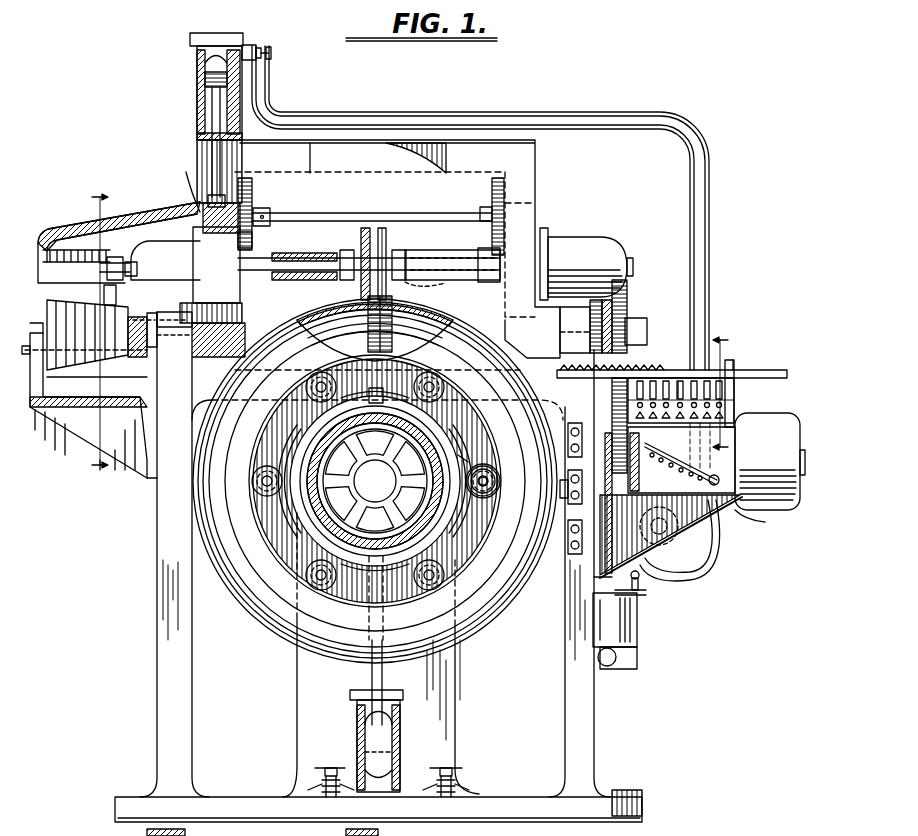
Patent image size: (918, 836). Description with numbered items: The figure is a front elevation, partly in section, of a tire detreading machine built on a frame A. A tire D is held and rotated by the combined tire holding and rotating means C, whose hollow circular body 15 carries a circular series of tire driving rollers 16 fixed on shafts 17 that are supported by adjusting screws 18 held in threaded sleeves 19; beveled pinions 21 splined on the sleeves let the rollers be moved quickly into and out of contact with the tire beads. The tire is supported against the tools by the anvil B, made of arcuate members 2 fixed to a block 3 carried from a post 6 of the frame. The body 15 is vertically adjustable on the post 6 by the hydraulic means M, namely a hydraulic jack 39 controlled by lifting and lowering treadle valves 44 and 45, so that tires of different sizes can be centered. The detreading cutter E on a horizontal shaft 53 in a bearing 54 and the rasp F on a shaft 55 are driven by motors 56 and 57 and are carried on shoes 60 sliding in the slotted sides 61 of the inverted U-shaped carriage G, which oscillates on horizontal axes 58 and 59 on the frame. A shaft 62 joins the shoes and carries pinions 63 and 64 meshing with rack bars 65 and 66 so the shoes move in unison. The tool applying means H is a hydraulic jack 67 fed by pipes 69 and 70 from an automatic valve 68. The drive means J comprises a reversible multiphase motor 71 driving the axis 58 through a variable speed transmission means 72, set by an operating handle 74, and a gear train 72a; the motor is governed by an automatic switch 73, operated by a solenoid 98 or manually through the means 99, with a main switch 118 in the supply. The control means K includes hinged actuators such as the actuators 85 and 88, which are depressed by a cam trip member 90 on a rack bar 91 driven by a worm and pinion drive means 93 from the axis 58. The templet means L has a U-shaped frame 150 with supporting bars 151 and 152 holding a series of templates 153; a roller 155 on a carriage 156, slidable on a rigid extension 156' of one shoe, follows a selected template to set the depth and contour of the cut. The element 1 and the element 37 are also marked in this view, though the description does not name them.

The frame A is at (155, 526).
The tire supporting anvil B is at (356, 313).
The combined tire holding and rotating means C is at (461, 503).
The tire D is at (483, 607).
The tire detreading cutter E is at (387, 242).
The rasp F is at (360, 241).
The oscillatory carriage G is at (538, 168).
The tool applying means H is at (196, 112).
The drive means J is at (777, 512).
The manually adjustable control means K is at (736, 399).
The templet means L is at (31, 293).
The hydraulic means M is at (357, 731).
The worm 1 is at (366, 336).
The arcuate members 2 is at (425, 302).
The block 3 is at (720, 394).
The post 6 is at (458, 706).
The hollow circular body 15 is at (300, 518).
The tire driving rollers 16 is at (432, 384).
The shafts 17 is at (490, 482).
The adjusting screws 18 is at (491, 471).
The sleeves 19 is at (486, 466).
The beveled pinions 21 is at (462, 460).
The rollers 37 is at (567, 561).
The hydraulic jack 39 is at (393, 741).
The lifting treadle valve 44 is at (318, 769).
The lowering treadle valve 45 is at (446, 768).
The horizontal shaft 53 is at (436, 268).
The bearing 54 is at (445, 285).
The shaft 55 is at (299, 268).
The motor 56 is at (597, 237).
The motor 57 is at (172, 240).
The horizontal axis 58 is at (638, 320).
The horizontal axis 59 is at (168, 345).
The shoes 60 is at (560, 212).
The slotted sides 61 is at (253, 193).
The shaft 62 is at (360, 213).
The pinion 63 is at (271, 214).
The pinion 64 is at (480, 213).
The rack bar 65 is at (253, 243).
The rack bar 66 is at (497, 262).
The hydraulic jack 67 is at (197, 83).
The automatic valve 68 is at (679, 553).
The pipe 69 is at (690, 192).
The pipe 70 is at (710, 192).
The variable speed reversible multiphase motor 71 is at (782, 450).
The variable speed transmission means 72 is at (684, 447).
The gear train 72a is at (633, 362).
The automatic variable speed and reversing switch 73 is at (639, 634).
The operating handle 74 is at (738, 506).
The hinged depressible actuator 85 is at (672, 365).
The hinged depressible actuator 88 is at (733, 368).
The cam trip member 90 is at (678, 380).
The rack bar 91 is at (739, 365).
The worm and pinion drive means 93 is at (562, 340).
The solenoid 98 is at (609, 667).
The manual operating means 99 is at (641, 589).
The main switch 118 is at (560, 491).
The U-shaped frame 150 is at (73, 427).
The supporting bar 151 is at (52, 378).
The supporting bar 152 is at (46, 323).
The templates 153 is at (88, 312).
The roller 155 is at (128, 297).
The carriage 156 is at (139, 268).
The rigid extension 156' is at (76, 206).